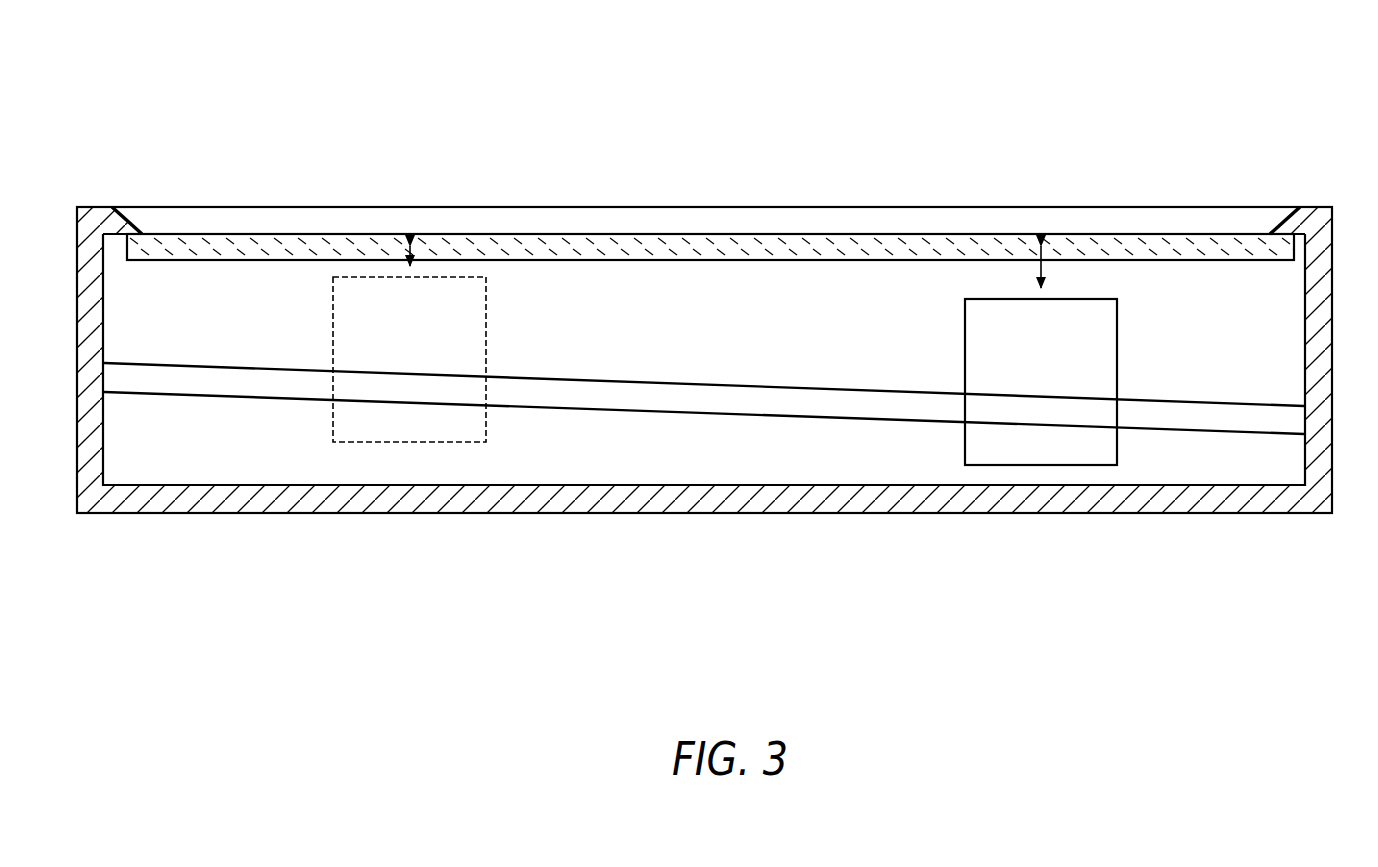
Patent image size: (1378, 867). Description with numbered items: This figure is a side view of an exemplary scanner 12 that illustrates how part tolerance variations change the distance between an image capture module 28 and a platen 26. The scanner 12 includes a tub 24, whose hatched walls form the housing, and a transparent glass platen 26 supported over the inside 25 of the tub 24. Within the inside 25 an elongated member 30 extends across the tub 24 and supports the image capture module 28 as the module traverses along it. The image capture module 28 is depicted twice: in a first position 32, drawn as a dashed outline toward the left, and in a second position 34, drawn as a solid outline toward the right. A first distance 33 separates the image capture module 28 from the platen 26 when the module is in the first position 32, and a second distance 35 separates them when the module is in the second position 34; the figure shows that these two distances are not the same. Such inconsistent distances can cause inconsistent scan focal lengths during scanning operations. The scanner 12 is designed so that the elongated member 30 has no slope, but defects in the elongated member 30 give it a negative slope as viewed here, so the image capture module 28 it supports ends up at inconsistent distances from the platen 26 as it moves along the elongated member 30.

The scanner 12 is at (1077, 107).
The tub 24 is at (817, 503).
The inside 25 is at (608, 450).
The platen 26 is at (758, 248).
The image capture module 28 is at (447, 433).
The elongated member 30 is at (249, 377).
The first position 32 is at (388, 268).
The first distance 33 is at (413, 250).
The second position 34 is at (1075, 288).
The second distance 35 is at (1040, 268).